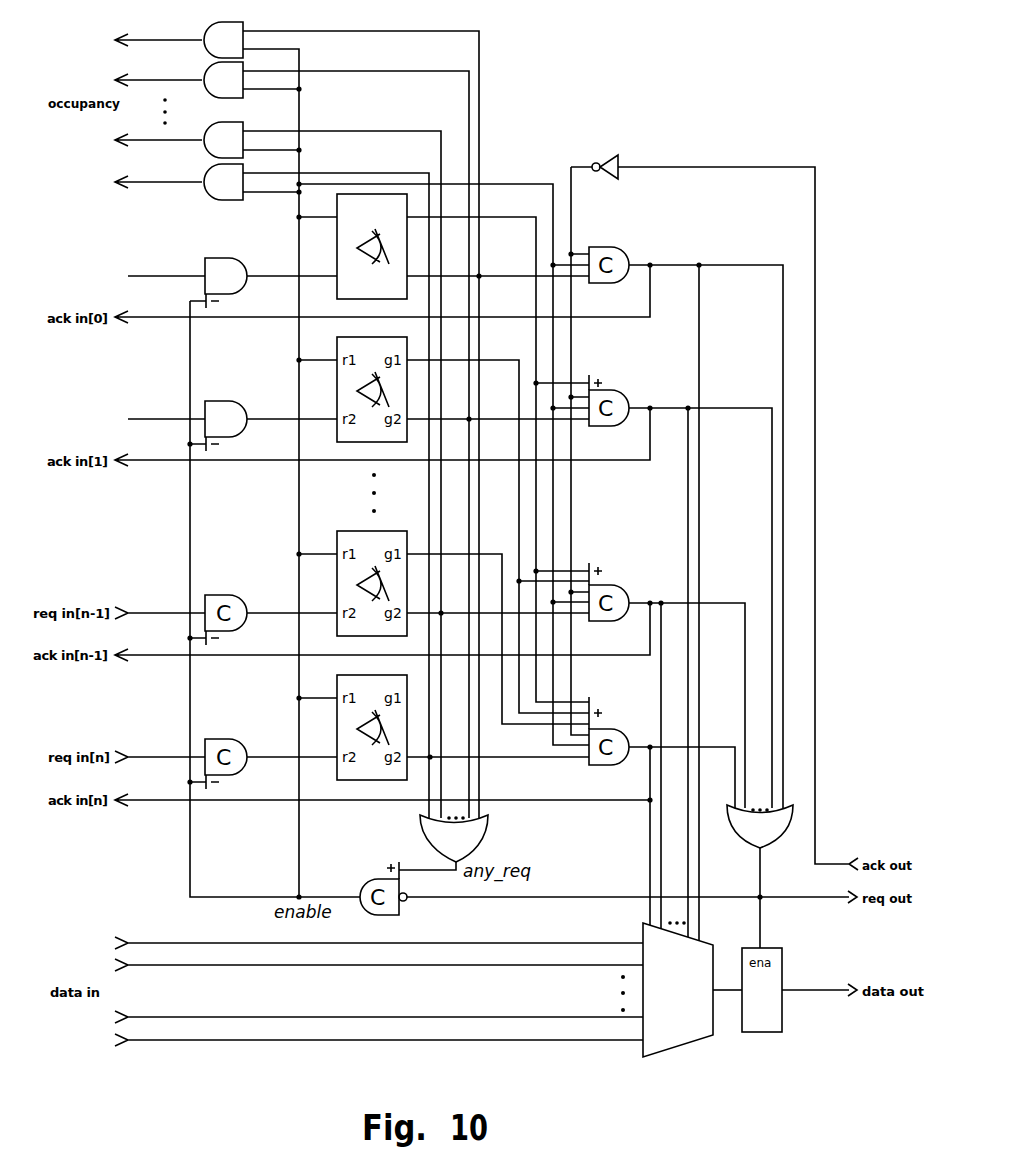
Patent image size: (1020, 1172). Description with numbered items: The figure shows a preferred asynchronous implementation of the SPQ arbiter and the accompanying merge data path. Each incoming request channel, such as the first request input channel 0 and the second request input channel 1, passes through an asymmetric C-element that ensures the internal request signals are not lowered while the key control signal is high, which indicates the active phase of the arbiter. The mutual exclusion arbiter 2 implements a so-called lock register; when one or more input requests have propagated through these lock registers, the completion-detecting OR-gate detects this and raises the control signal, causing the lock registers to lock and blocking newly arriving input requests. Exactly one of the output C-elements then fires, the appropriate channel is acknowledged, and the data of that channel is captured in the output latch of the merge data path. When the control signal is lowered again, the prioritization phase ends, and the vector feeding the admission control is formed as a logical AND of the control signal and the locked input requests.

The request input channel 0 C-element 0 is at (115, 270).
The request input channel 1 C-element 1 is at (115, 413).
The mutual exclusion arbiter (r2/g2) 2 is at (353, 246).